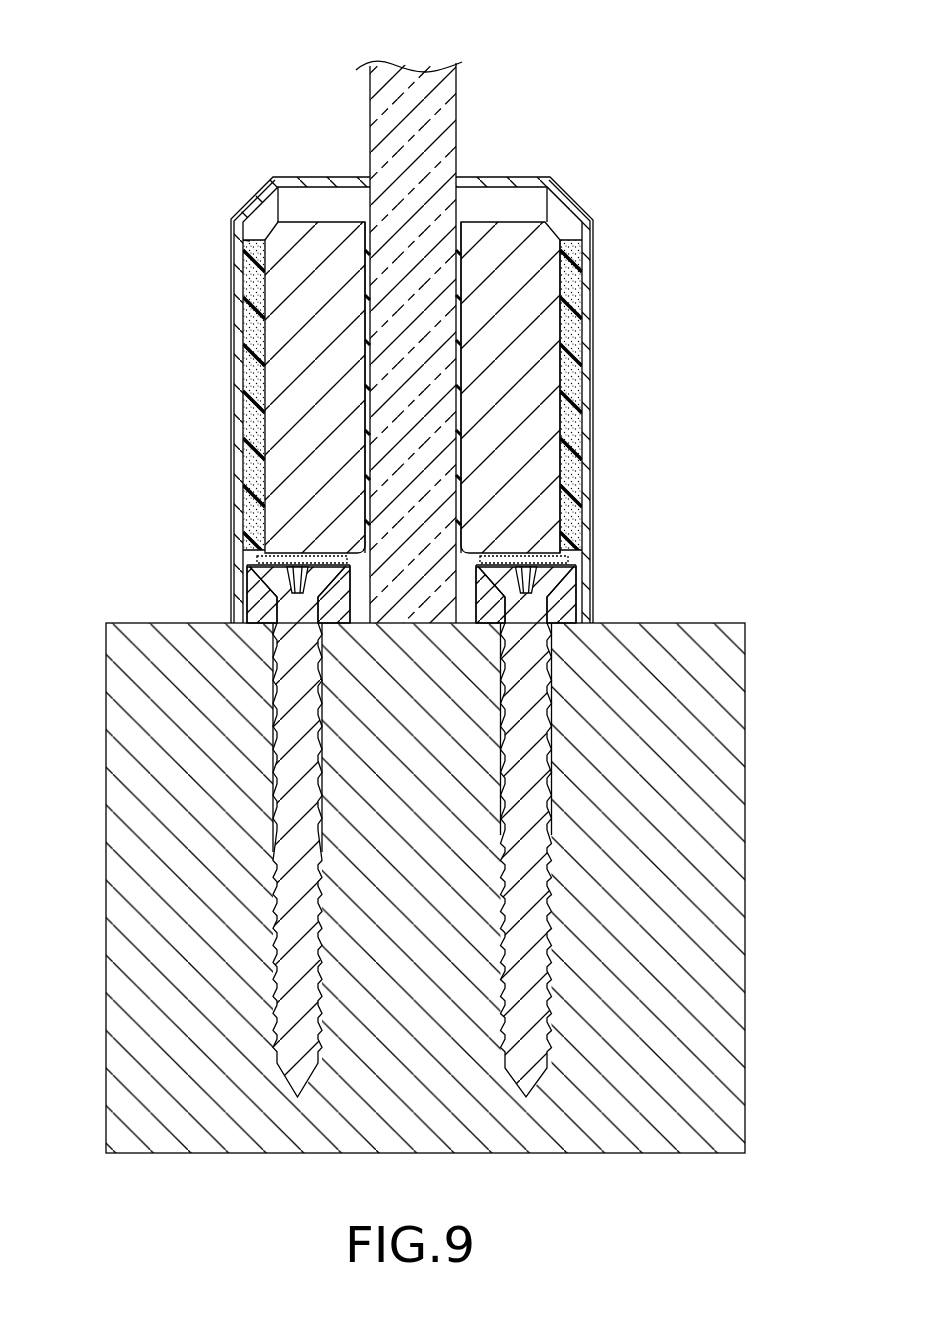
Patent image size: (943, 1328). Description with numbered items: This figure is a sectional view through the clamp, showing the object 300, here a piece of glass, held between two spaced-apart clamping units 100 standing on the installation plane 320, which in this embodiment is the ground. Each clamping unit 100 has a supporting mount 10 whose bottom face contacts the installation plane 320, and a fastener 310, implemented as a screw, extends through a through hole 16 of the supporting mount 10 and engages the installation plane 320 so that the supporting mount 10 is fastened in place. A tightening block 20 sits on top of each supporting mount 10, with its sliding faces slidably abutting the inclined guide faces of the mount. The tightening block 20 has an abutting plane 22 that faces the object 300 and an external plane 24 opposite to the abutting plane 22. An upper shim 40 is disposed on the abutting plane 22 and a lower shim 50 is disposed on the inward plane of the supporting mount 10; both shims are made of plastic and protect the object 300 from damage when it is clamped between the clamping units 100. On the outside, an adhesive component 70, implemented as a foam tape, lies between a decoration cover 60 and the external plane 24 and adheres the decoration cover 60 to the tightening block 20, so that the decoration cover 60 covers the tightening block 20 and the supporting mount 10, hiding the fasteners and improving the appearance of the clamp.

The object 300 is at (417, 92).
The clamping unit 100 is at (455, 335).
The tightening block 20 is at (485, 210).
The decoration cover 60 is at (572, 195).
The external plane 24 is at (562, 300).
The abutting plane 22 is at (458, 340).
The upper shim 40 is at (458, 384).
The adhesive component 70 is at (568, 466).
The lower shim 50 is at (452, 598).
The supporting mount 10 is at (588, 581).
The through hole 16 is at (576, 598).
The installation plane 320 is at (139, 621).
The fastener 310 is at (295, 857).